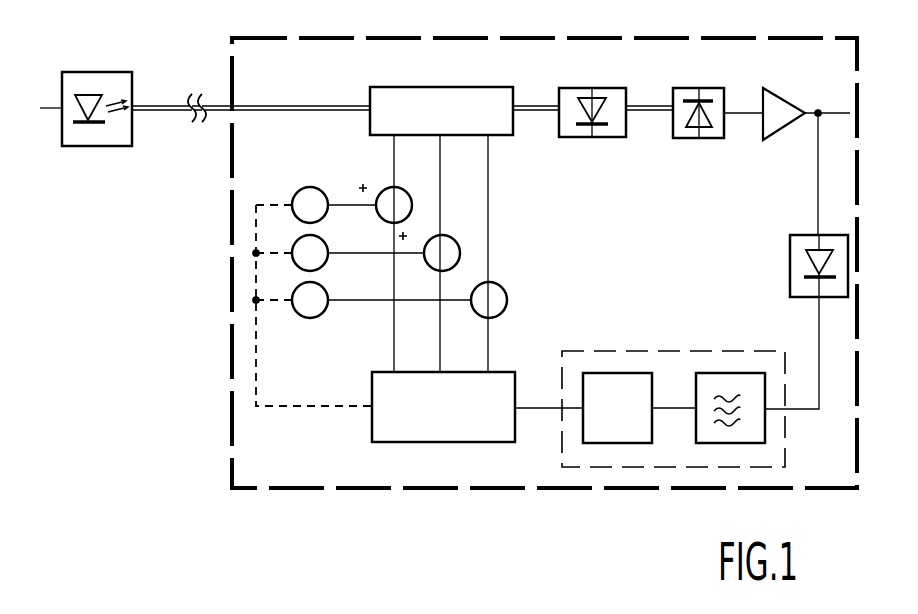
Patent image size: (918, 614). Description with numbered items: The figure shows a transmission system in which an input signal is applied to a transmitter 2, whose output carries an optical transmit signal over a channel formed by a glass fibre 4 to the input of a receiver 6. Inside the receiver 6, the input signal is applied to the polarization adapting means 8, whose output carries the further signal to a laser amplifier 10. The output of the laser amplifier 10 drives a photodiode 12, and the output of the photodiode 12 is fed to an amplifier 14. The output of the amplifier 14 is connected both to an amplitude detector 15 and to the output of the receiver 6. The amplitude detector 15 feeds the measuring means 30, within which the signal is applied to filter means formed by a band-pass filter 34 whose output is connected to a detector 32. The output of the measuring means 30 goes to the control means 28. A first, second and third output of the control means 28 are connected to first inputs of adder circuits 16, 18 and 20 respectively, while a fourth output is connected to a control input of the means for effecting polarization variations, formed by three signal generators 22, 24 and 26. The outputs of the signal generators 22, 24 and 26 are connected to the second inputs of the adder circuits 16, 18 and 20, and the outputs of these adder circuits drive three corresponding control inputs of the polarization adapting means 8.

The transmitter 2 is at (92, 68).
The glass fibre 4 is at (155, 115).
The receiver 6 is at (306, 38).
The polarization adapting means 8 is at (458, 98).
The laser amplifier 10 is at (589, 86).
The photodiode 12 is at (697, 87).
The amplifier 14 is at (786, 96).
The amplitude detector 15 is at (796, 244).
The adder circuit 16 is at (399, 198).
The adder circuit 18 is at (447, 246).
The adder circuit 20 is at (507, 296).
The signal generator 22 is at (318, 194).
The signal generator 24 is at (316, 250).
The signal generator 26 is at (319, 299).
The control means 28 is at (508, 388).
The measuring means 30 is at (637, 350).
The detector 32 is at (642, 384).
The band-pass filter 34 is at (745, 372).